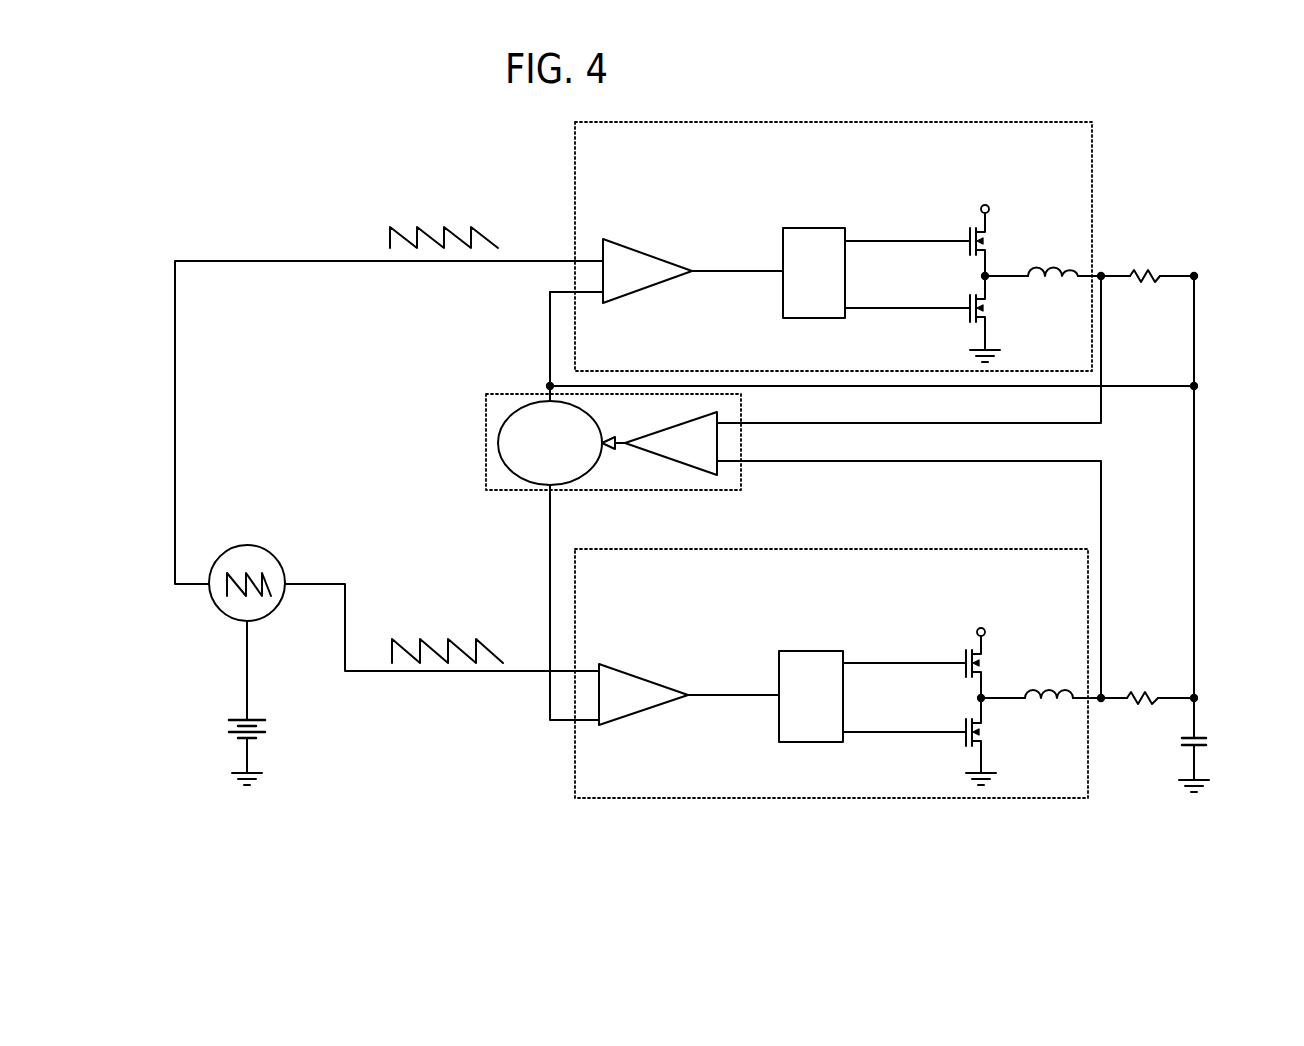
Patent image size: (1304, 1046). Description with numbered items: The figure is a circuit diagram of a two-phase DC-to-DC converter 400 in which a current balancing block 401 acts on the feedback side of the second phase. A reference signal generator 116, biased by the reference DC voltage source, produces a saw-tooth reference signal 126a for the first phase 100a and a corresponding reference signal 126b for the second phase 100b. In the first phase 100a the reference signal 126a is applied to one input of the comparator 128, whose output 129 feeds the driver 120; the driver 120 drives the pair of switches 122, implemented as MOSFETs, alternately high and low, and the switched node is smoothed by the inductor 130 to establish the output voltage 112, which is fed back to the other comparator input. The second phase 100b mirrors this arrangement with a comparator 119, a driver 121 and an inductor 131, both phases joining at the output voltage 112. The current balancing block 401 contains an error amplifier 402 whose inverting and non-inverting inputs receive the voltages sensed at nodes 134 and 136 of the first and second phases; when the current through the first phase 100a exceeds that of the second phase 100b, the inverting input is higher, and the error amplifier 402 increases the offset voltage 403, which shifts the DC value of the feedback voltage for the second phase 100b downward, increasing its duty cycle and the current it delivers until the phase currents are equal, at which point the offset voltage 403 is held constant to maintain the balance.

The two-phase DC-to-DC converter 400 is at (303, 175).
The first phase 100a is at (907, 122).
The second phase 100b is at (908, 798).
The output voltage Vout 112 is at (1192, 375).
The reference signal generator 116 is at (268, 552).
The second comparator 119 is at (628, 670).
The driver 120 is at (817, 228).
The second driver 121 is at (815, 651).
The pair of switches 122 is at (1007, 212).
The reference signal 126a is at (450, 220).
The second sawtooth ramp signal 126b is at (470, 618).
The comparator 128 is at (632, 246).
The comparator output signal 129 is at (700, 268).
The inductor 130 is at (1071, 268).
The second inductor L2 131 is at (1048, 665).
The first phase sensing node 134 is at (1104, 282).
The second phase sensing node 136 is at (1104, 704).
The current balancing block 401 is at (508, 394).
The error amplifier 402 is at (722, 420).
The offset voltage 403 is at (497, 445).